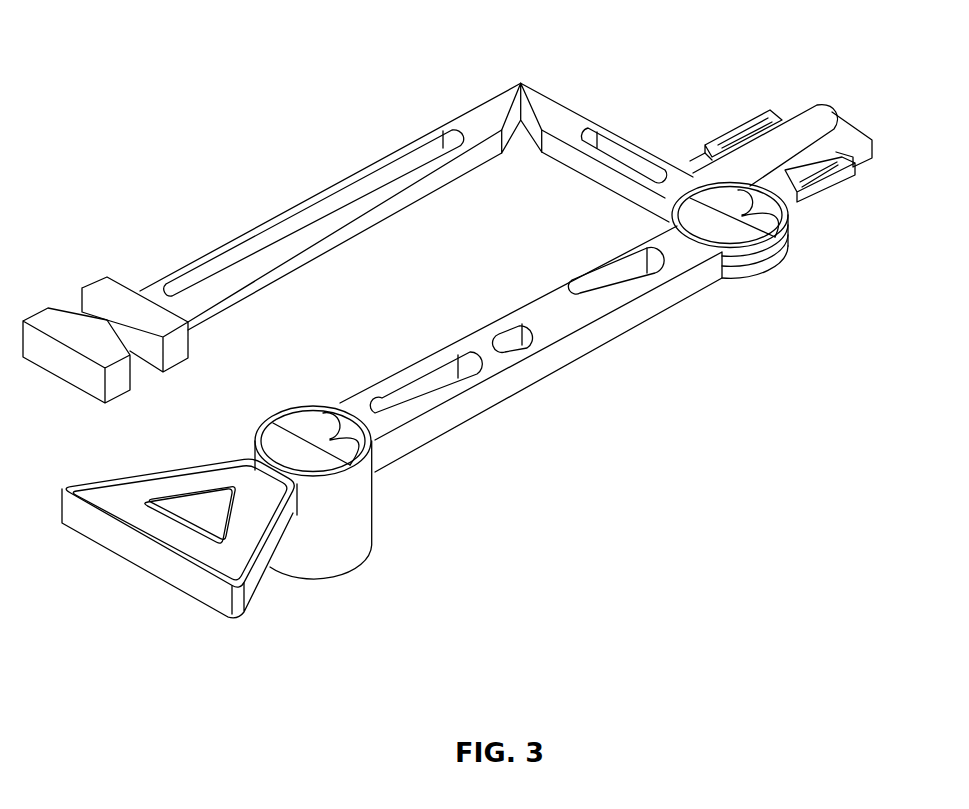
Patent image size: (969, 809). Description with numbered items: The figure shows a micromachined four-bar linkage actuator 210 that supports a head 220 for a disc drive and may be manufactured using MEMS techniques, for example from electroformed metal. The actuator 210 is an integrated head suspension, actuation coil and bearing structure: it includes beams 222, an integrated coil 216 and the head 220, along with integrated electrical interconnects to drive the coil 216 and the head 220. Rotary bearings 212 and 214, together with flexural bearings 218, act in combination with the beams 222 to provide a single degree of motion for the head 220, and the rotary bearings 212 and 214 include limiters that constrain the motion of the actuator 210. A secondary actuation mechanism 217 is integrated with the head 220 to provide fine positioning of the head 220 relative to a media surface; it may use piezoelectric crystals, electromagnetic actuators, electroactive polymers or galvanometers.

The micromachined four-bar linkage actuator 210 is at (158, 122).
The rotary bearing 212 is at (787, 243).
The rotary bearing 214 is at (342, 502).
The integrated coil 216 is at (226, 565).
The secondary actuation mechanism 217 is at (740, 127).
The flexural bearings 218 is at (520, 83).
The head 220 is at (847, 140).
The beams 222 is at (573, 167).